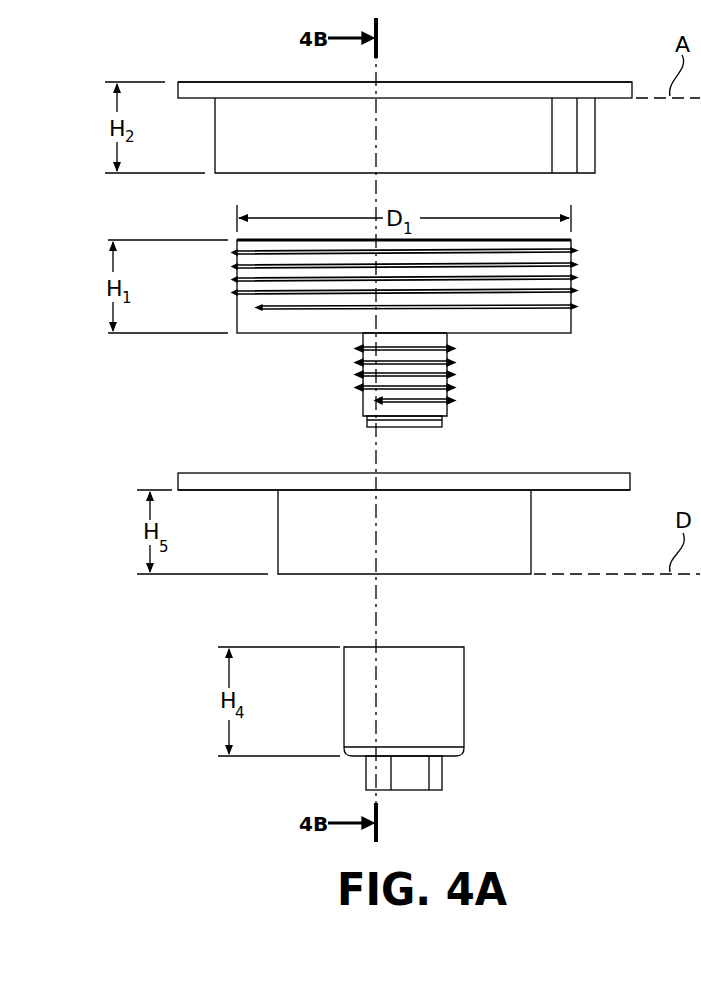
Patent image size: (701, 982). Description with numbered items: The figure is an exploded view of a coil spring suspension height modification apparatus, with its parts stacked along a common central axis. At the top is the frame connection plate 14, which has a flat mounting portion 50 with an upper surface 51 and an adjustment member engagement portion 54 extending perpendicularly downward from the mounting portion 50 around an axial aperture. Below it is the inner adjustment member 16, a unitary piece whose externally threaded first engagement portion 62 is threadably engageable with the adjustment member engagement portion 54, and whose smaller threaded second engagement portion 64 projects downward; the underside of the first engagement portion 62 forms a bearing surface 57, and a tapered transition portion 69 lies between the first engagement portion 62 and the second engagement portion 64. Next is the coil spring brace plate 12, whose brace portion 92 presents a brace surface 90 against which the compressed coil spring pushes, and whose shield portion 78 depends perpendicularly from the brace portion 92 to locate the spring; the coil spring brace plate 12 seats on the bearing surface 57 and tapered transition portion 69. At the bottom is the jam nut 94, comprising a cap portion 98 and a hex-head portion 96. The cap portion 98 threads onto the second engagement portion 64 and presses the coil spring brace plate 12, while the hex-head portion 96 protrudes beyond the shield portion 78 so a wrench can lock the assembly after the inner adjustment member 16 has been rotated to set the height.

The coil spring brace plate 12 is at (407, 502).
The frame connection plate 14 is at (417, 98).
The inner adjustment member 16 is at (400, 333).
The mounting portion 50 is at (199, 90).
The upper surface 51 is at (529, 82).
The adjustment member engagement portion 54 is at (590, 134).
The bearing surface 57 is at (528, 335).
The first engagement portion 62 is at (572, 292).
The second engagement portion 64 is at (448, 348).
The transition portion 69 is at (358, 335).
The shield portion 78 is at (505, 536).
The brace surface 90 is at (568, 491).
The brace portion 92 is at (572, 474).
The jam nut 94 is at (391, 718).
The hex-head portion 96 is at (437, 776).
The cap portion 98 is at (467, 682).